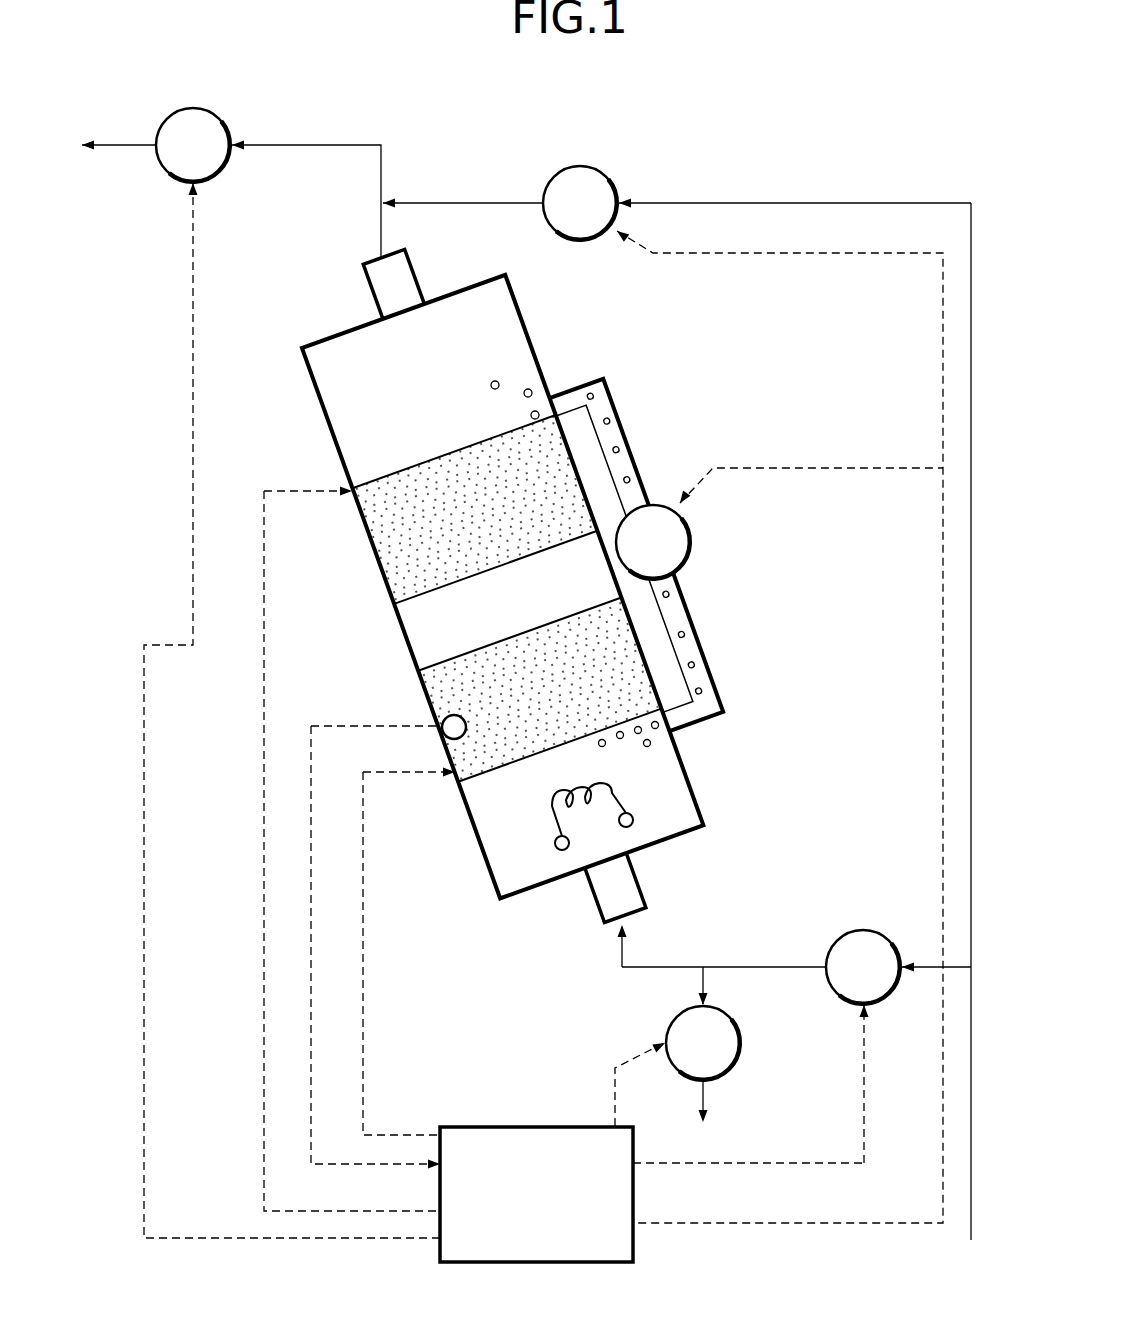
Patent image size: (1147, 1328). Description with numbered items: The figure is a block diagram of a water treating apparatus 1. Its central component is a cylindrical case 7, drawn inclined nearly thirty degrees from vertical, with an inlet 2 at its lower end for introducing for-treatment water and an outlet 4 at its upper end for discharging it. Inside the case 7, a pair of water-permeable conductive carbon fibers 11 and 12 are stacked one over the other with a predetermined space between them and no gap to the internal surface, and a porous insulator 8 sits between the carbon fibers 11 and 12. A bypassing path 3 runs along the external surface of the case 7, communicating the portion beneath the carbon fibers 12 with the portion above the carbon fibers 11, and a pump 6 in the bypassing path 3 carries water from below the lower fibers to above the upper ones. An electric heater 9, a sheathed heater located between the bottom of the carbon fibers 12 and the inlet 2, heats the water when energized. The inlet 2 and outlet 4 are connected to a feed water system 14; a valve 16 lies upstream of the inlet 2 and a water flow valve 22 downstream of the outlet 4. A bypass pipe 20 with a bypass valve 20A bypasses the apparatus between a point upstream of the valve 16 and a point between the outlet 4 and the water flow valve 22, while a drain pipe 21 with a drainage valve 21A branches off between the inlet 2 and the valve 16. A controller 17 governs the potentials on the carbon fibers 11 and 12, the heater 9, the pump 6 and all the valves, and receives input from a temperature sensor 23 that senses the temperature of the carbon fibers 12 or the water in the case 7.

The water treating apparatus 1 is at (783, 373).
The inlet 2 is at (641, 882).
The bypassing path 3 is at (633, 453).
The outlet 4 is at (367, 287).
The pump 6 is at (693, 543).
The case 7 is at (537, 340).
The porous insulator 8 is at (420, 628).
The electric heater 9 is at (620, 797).
The carbon fibers 11 is at (393, 488).
The carbon fibers 12 is at (490, 778).
The feed water system 14 is at (115, 147).
The valve 16 is at (860, 929).
The controller 17 is at (503, 1126).
The bypass pipe 20 is at (783, 202).
The bypass valve 20A is at (605, 170).
The drain pipe 21 is at (700, 978).
The drainage valve 21A is at (743, 1035).
The water flow valve 22 is at (170, 175).
The temperature sensor 23 is at (447, 708).